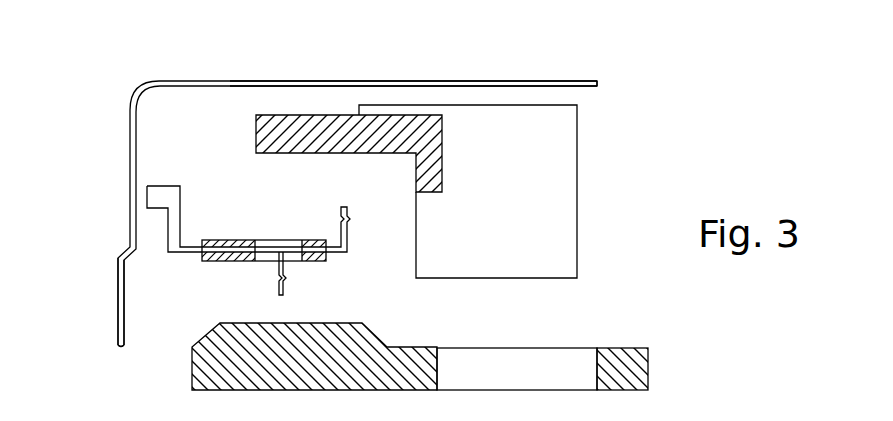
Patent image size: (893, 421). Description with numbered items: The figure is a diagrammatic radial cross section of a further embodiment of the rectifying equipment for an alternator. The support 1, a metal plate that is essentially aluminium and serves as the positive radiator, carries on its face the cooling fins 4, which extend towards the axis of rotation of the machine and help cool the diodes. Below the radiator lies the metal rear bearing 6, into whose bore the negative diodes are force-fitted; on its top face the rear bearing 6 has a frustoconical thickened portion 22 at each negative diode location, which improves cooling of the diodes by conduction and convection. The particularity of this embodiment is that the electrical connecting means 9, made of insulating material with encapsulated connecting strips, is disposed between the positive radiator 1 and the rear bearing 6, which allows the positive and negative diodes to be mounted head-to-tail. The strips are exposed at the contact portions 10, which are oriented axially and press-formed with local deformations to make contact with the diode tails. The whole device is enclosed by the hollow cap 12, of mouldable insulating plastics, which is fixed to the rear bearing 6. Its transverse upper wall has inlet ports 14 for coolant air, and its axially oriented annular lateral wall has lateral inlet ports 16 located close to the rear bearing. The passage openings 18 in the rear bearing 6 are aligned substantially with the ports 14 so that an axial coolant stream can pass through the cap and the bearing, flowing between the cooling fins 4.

The support 1 is at (291, 158).
The cooling fins 4 is at (546, 167).
The rear bearing 6 is at (625, 372).
The electrical connecting means 9 is at (186, 202).
The exposed contact portions 10 is at (340, 237).
The hollow cap 12 is at (119, 160).
The inlet ports 14 is at (509, 80).
The lateral inlet ports 16 is at (122, 306).
The passage openings 18 is at (528, 380).
The frustoconical thickened portion 22 is at (360, 333).